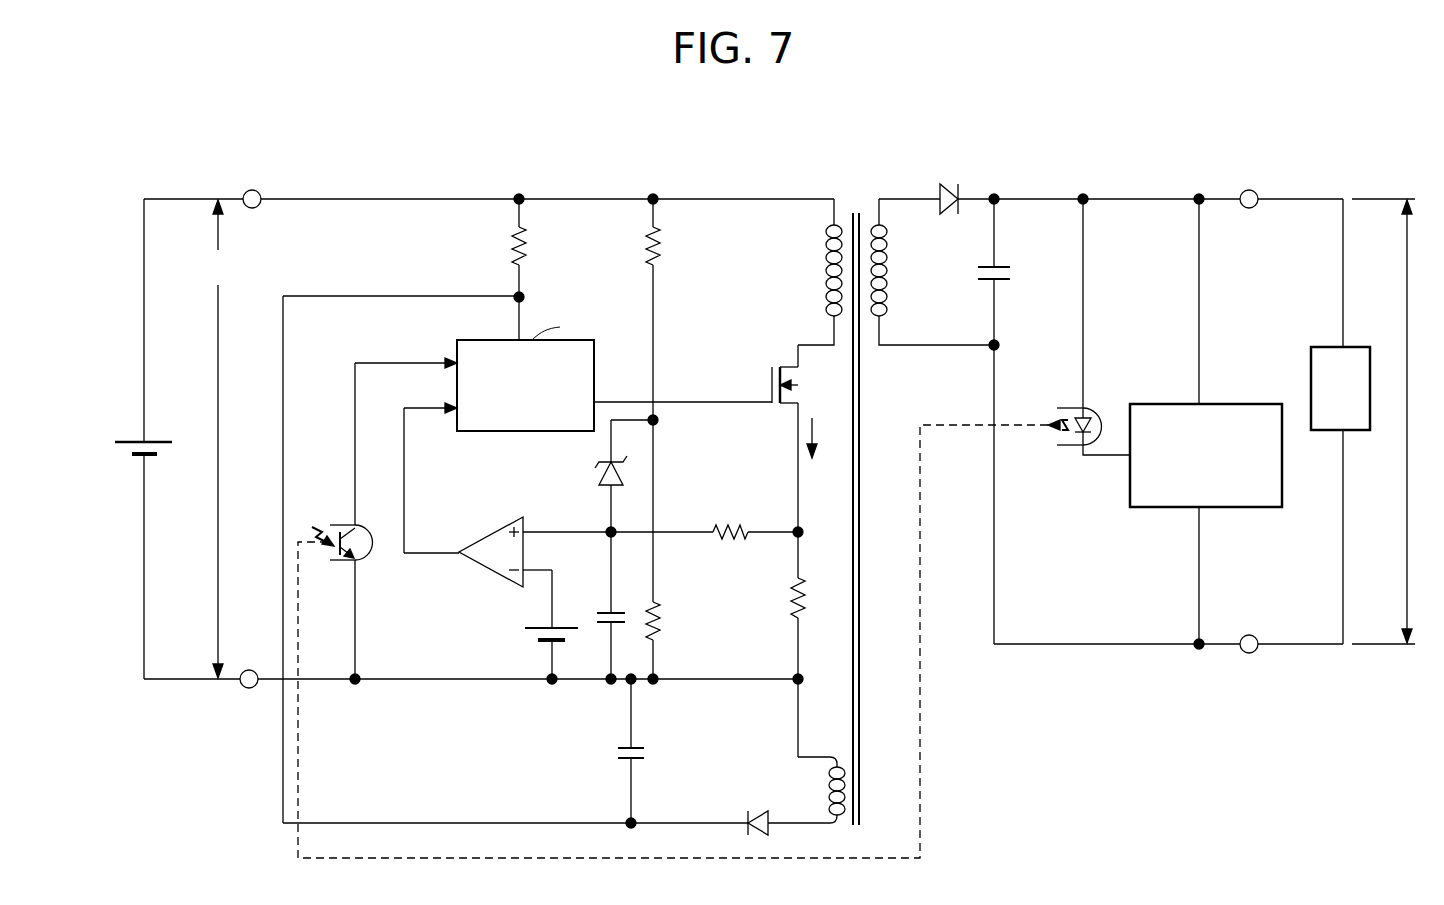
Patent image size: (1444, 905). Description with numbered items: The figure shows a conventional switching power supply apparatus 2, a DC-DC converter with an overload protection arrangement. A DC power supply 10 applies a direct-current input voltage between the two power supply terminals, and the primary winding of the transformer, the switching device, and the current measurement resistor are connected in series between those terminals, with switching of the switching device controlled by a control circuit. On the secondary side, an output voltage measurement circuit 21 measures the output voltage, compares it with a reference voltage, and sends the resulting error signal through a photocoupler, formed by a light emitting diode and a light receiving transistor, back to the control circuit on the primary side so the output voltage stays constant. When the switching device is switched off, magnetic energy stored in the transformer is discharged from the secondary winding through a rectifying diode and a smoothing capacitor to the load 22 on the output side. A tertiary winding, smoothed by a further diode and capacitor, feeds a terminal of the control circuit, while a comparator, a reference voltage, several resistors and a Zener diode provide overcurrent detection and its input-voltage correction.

The switching power supply apparatus 2 is at (792, 139).
The DC power supply 10 is at (118, 446).
The output voltage measurement circuit 21 is at (1255, 404).
The load 22 is at (1353, 347).